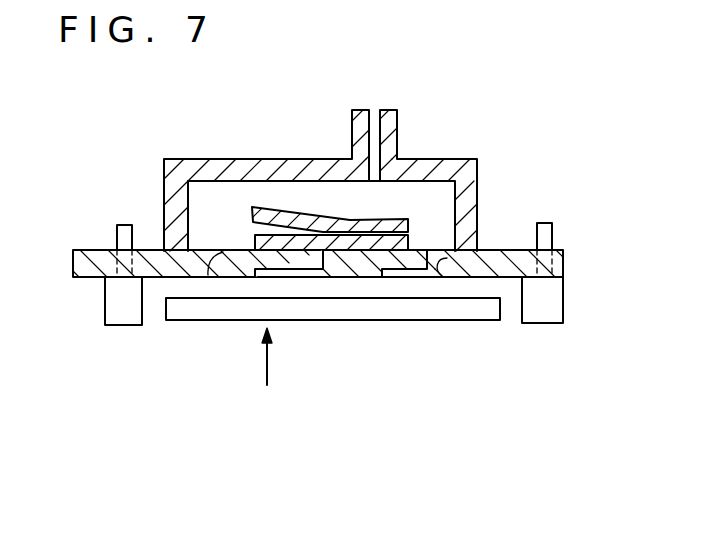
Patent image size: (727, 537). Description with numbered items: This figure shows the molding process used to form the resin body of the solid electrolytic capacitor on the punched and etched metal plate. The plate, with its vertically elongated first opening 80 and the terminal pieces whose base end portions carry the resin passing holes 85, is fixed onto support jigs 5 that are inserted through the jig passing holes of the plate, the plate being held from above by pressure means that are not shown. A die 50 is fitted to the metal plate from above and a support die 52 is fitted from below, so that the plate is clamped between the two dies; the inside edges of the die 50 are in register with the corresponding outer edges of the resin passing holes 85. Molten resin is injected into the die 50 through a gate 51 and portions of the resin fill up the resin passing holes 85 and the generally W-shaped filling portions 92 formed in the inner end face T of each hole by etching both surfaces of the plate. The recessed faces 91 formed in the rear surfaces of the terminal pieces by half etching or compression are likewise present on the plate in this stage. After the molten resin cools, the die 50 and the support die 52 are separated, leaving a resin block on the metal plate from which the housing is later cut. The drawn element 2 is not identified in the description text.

The piezoelectric vibrating element 2 is at (316, 202).
The die 50 is at (470, 187).
The gate 51 is at (350, 158).
The support die 52 is at (395, 308).
The support jig 5 is at (123, 310).
The first opening 80 is at (377, 250).
The resin passing hole 85 is at (200, 251).
The recessed face 91 is at (303, 269).
The filling portion 92 is at (203, 278).